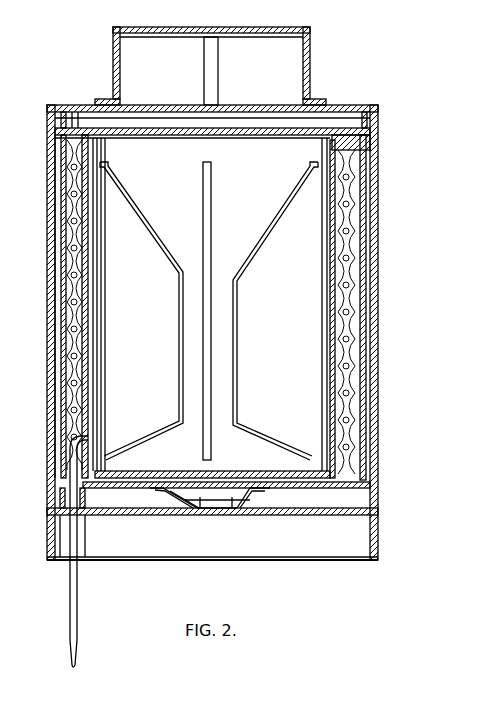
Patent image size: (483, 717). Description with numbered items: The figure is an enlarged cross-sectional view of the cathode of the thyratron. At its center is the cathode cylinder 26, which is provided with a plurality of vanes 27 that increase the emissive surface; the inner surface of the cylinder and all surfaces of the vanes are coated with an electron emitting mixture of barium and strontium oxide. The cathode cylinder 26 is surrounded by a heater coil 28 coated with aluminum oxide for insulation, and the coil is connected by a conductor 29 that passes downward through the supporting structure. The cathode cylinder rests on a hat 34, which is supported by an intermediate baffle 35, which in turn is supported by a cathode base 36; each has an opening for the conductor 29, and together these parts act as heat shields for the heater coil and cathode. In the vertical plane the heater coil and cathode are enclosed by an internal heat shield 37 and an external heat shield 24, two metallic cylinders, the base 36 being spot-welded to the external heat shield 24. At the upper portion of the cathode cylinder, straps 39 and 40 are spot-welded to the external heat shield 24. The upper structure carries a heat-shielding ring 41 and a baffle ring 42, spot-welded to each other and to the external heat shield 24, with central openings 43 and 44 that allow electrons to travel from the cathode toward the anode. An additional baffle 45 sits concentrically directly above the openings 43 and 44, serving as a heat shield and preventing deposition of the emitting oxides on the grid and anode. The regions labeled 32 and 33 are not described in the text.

The external heat shield 24 is at (376, 362).
The cathode cylinder 26 is at (300, 463).
The vanes 27 is at (280, 226).
The heater coil 28 is at (349, 403).
The conductor 29 is at (78, 588).
The inner channel wall 32 is at (353, 198).
The left spring channel 33 is at (80, 367).
The hat 34 is at (294, 478).
The intermediate baffle 35 is at (275, 488).
The cathode base 36 is at (166, 548).
The internal heat shield 37 is at (362, 313).
The strap 39 is at (374, 142).
The strap 40 is at (66, 153).
The heat-shielding ring 41 is at (76, 108).
The baffle ring 42 is at (344, 106).
The central opening 43 is at (162, 133).
The central opening 44 is at (246, 106).
The baffle 45 is at (290, 27).